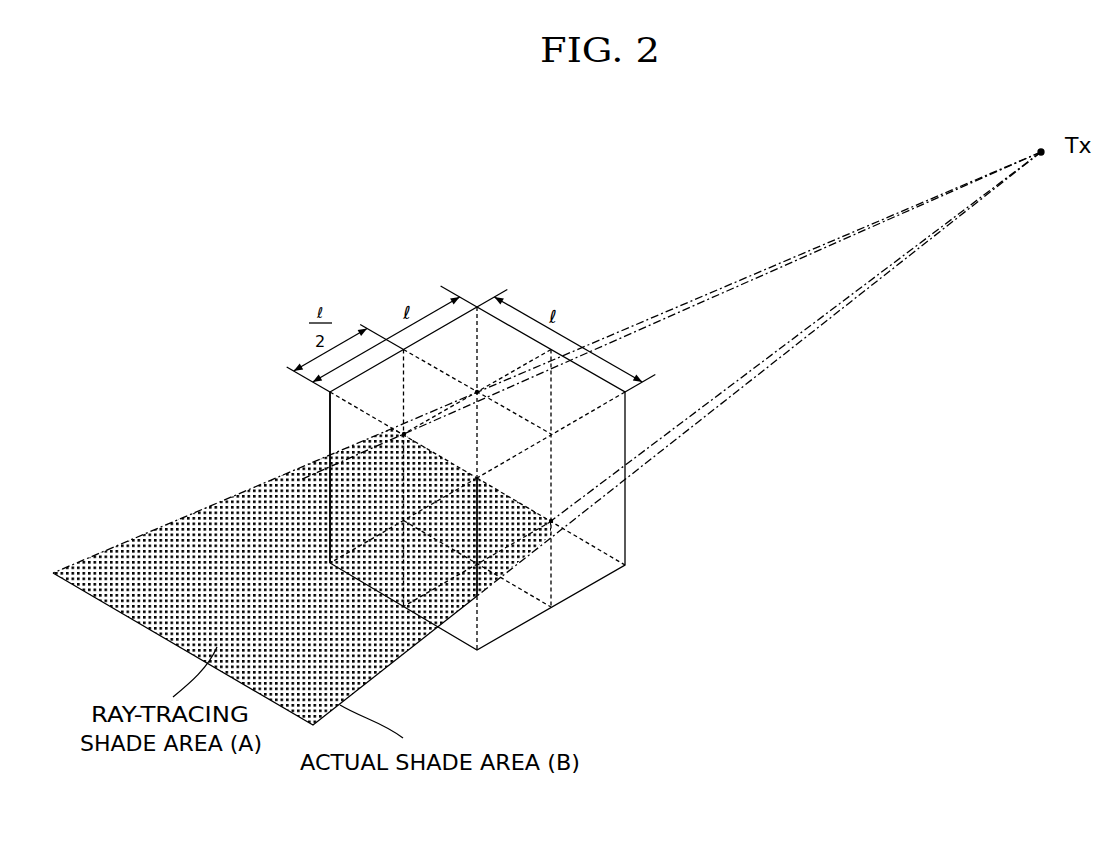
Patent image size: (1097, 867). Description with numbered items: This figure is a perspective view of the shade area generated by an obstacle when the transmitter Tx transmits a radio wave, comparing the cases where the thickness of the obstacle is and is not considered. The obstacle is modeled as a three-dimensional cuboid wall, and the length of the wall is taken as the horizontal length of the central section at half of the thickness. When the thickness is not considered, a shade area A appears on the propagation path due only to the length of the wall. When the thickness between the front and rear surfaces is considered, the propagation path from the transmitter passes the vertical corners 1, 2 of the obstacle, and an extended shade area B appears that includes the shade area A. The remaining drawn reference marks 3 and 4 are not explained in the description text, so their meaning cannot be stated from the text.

The corner 1 is at (478, 340).
The corner 2 is at (625, 423).
The building side wall 3 is at (330, 424).
The building front edge 4 is at (482, 622).